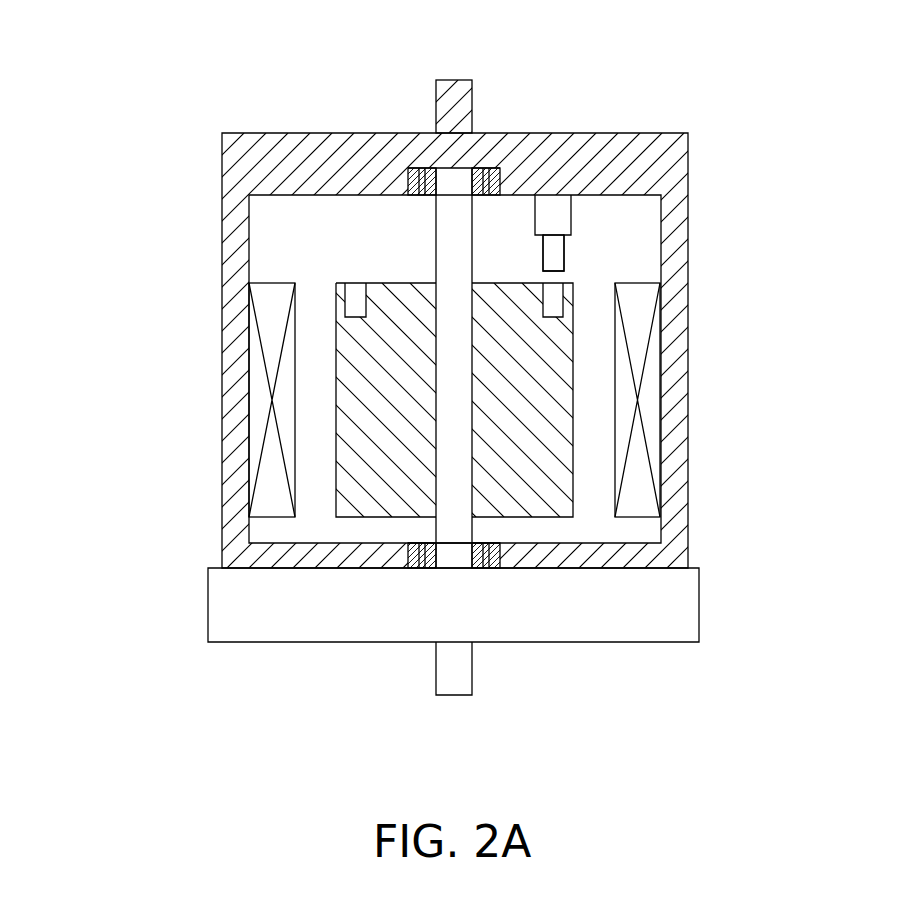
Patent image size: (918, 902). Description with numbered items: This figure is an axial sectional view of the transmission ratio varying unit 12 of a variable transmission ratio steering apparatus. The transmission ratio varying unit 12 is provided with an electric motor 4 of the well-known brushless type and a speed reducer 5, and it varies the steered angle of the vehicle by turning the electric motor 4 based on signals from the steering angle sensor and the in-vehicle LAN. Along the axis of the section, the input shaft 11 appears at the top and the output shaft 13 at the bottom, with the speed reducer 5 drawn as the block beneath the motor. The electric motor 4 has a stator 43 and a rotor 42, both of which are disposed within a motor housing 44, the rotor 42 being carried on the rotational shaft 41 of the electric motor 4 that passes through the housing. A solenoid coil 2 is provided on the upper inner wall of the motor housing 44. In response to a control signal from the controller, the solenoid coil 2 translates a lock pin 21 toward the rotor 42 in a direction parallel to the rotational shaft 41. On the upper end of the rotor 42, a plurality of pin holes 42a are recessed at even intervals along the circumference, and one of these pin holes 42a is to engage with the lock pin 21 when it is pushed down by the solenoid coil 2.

The solenoid coil 2 is at (662, 167).
The electric motor 4 is at (459, 293).
The speed reducer 5 is at (618, 630).
The input shaft 11 is at (462, 97).
The transmission ratio varying unit 12 is at (459, 381).
The output shaft 13 is at (453, 678).
The lock pin 21 is at (553, 257).
The rotational shaft 41 is at (457, 245).
The rotor 42 is at (454, 376).
The pin holes 42a is at (358, 307).
The stator 43 is at (652, 373).
The motor housing 44 is at (660, 162).